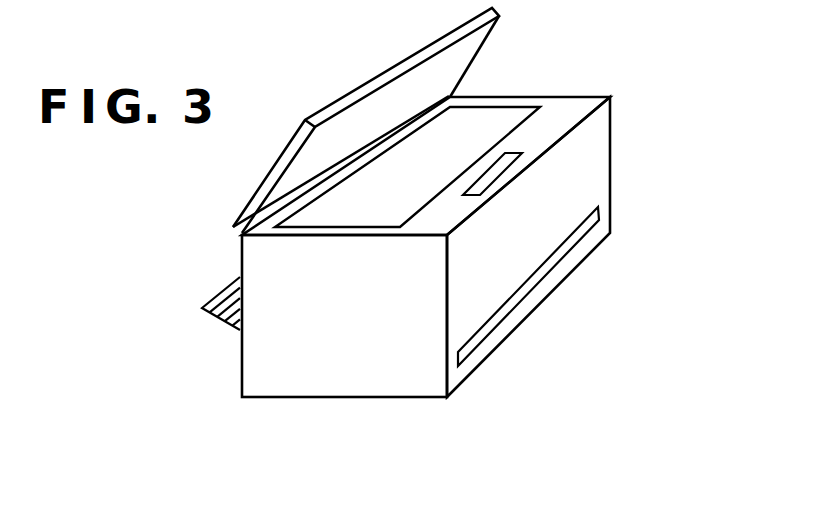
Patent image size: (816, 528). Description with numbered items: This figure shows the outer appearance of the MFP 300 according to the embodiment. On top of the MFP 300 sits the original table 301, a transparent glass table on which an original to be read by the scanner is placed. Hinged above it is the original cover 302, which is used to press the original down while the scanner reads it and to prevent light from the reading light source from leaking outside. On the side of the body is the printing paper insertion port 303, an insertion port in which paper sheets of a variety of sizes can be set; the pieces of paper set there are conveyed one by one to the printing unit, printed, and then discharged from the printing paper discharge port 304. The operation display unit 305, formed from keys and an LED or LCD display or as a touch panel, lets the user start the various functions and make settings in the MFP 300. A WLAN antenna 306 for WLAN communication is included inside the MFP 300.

The MFP 300 is at (247, 378).
The original table 301 is at (495, 113).
The original cover 302 is at (380, 72).
The printing paper insertion port 303 is at (214, 297).
The printing paper discharge port 304 is at (548, 273).
The operation display unit 305 is at (498, 172).
The WLAN antenna 306 is at (468, 253).